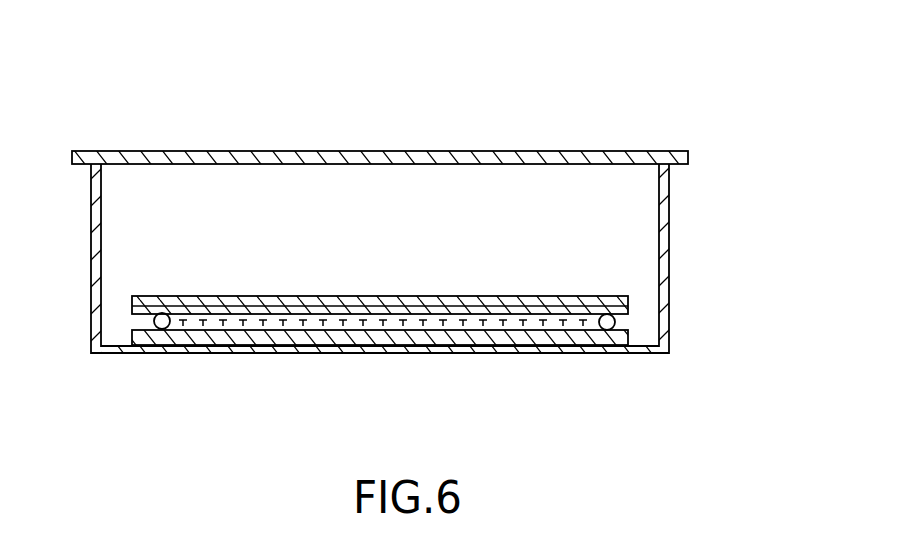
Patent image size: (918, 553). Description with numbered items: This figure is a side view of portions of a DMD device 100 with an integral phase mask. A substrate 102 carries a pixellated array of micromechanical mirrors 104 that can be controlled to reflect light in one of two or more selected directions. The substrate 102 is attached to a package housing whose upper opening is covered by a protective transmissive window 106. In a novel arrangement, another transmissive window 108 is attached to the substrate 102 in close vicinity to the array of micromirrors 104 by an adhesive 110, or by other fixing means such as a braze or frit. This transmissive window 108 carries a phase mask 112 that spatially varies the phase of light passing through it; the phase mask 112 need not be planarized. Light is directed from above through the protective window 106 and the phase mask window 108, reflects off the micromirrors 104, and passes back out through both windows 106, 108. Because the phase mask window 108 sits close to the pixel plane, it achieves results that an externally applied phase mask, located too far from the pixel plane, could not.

The DMD device 100 is at (726, 128).
The substrate 102 is at (153, 336).
The micromechanical mirrors 104 is at (312, 327).
The protective transmissive window 106 is at (150, 158).
The transmissive window 108 is at (646, 307).
The adhesive 110 is at (154, 318).
The phase mask 112 is at (133, 310).